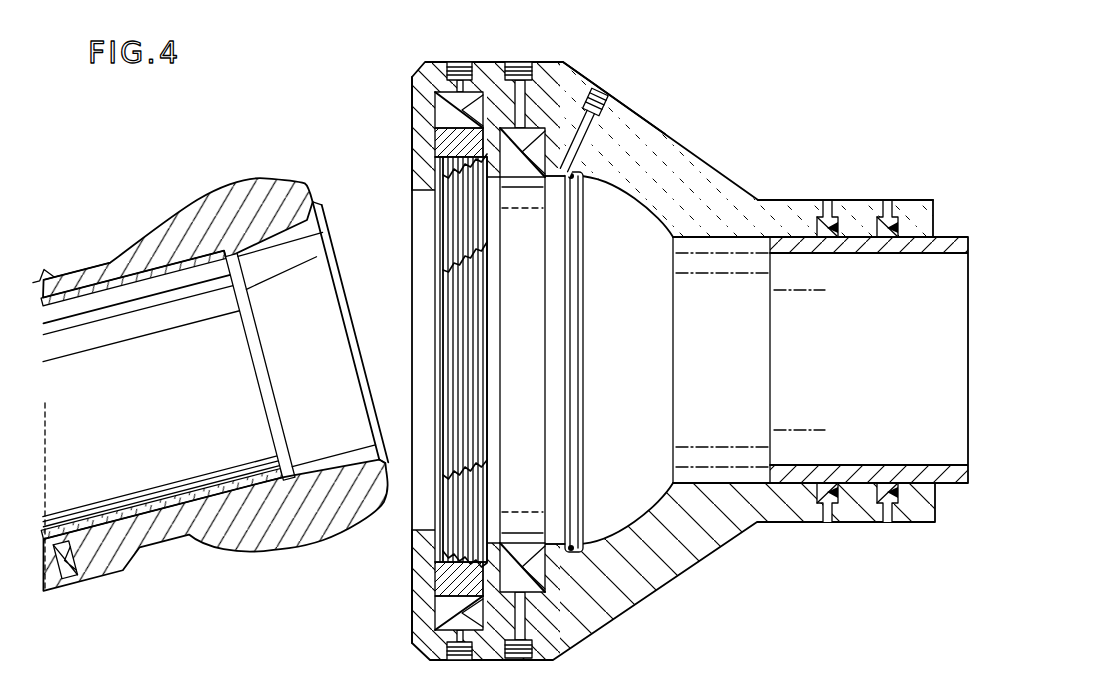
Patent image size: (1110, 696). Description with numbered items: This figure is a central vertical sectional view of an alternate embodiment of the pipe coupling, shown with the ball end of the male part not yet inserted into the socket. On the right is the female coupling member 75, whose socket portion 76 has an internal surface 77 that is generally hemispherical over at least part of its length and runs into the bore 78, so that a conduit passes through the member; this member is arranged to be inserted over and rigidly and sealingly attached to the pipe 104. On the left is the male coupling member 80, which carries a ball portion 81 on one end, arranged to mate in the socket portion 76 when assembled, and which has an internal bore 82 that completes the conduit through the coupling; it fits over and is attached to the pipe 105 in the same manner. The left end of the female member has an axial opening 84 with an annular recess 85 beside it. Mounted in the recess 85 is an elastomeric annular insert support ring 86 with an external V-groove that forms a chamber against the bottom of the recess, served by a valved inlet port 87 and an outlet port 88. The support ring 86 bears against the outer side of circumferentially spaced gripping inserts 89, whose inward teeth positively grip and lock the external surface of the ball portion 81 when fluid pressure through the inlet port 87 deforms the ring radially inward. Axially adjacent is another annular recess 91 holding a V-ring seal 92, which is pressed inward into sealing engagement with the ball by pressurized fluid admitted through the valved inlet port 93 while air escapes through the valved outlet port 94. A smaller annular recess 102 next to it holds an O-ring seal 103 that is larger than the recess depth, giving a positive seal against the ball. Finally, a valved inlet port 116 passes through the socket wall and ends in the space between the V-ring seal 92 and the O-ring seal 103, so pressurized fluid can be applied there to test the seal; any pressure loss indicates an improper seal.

The female coupling member 75 is at (788, 200).
The socket portion 76 is at (665, 158).
The internal surface 77 is at (653, 222).
The bore 78 is at (730, 240).
The male coupling member 80 is at (88, 267).
The ball portion 81 is at (248, 182).
The internal bore 82 is at (168, 270).
The axial opening 84 is at (440, 545).
The annular recess 85 is at (437, 140).
The annular insert support ring 86 is at (438, 108).
The valved inlet port 87 is at (459, 60).
The outlet port 88 is at (472, 661).
The gripping inserts 89 is at (440, 165).
The annular recess 91 is at (597, 74).
The V-ring seal 92 is at (536, 132).
The valved inlet port 93 is at (518, 60).
The valved outlet port 94 is at (533, 660).
The annular recess 102 is at (578, 178).
The O-ring seal 103 is at (571, 180).
The pipe 104 is at (948, 235).
The pipe 105 is at (133, 300).
The valved inlet port 116 is at (606, 120).